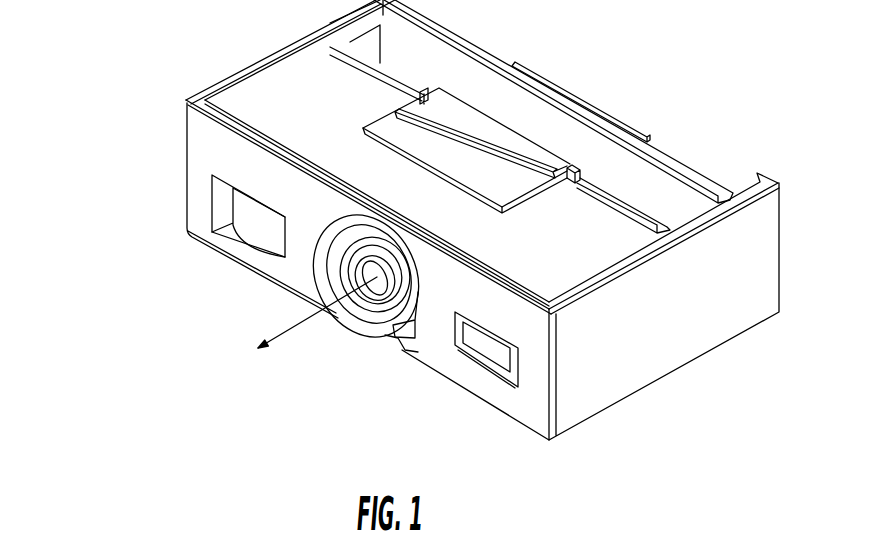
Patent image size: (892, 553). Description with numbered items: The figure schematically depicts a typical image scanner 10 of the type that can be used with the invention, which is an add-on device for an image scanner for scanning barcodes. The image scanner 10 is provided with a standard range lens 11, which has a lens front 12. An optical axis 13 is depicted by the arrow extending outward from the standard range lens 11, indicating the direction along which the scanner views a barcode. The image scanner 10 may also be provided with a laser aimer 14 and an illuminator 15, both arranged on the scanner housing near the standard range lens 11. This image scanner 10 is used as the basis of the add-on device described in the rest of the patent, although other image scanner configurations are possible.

The image scanner 10 is at (638, 330).
The standard range lens 11 is at (348, 263).
The lens front 12 is at (368, 297).
The optical axis 13 is at (245, 333).
The laser aimer 14 is at (485, 357).
The illuminator 15 is at (225, 208).